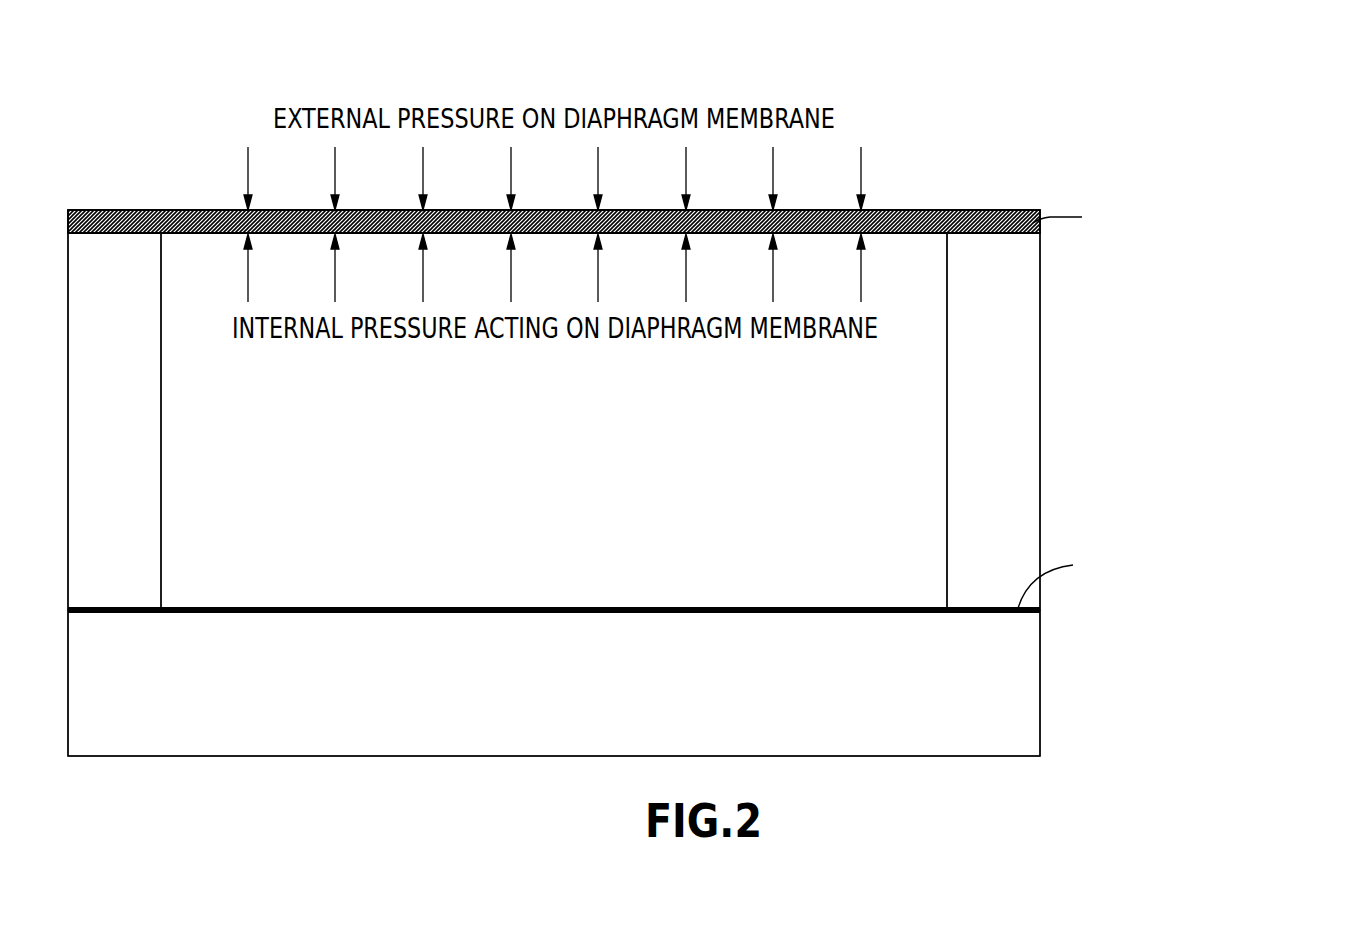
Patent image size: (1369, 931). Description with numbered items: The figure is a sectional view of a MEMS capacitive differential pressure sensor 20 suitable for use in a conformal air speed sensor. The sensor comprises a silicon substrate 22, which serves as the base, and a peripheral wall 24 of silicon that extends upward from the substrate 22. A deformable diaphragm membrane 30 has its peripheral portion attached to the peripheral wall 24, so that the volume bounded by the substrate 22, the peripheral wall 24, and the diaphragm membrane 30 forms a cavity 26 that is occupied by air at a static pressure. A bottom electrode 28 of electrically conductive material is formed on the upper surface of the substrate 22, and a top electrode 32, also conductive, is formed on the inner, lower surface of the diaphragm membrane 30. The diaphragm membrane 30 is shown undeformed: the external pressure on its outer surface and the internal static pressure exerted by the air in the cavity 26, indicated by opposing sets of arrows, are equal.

The MEMS capacitive differential pressure sensor 20 is at (130, 63).
The silicon substrate 22 is at (1020, 697).
The peripheral wall 24 is at (152, 513).
The cavity 26 is at (922, 508).
The bottom electrode 28 is at (630, 608).
The diaphragm membrane 30 is at (1005, 213).
The top electrode 32 is at (1024, 235).